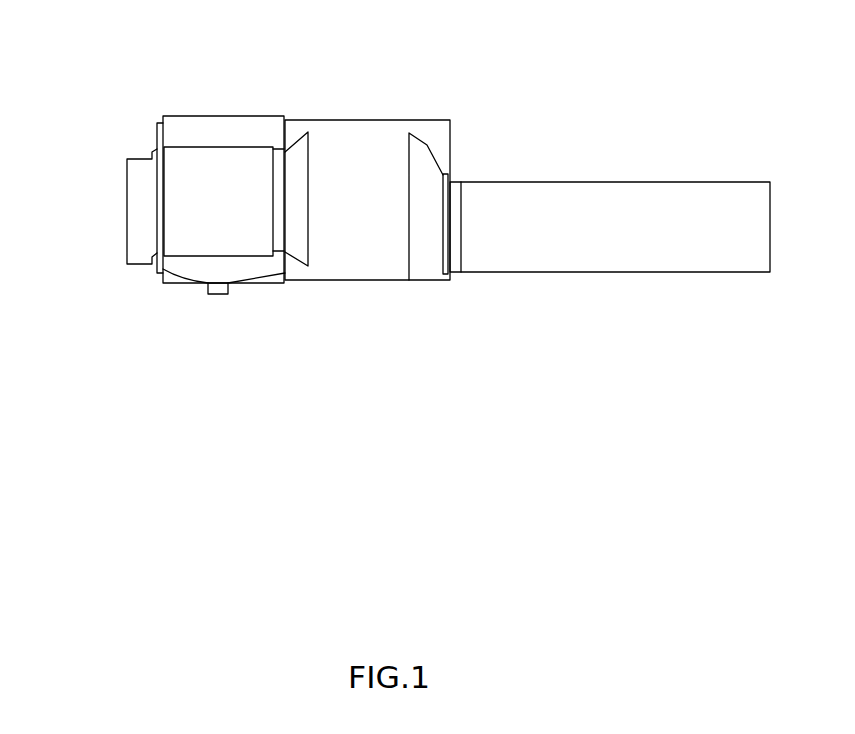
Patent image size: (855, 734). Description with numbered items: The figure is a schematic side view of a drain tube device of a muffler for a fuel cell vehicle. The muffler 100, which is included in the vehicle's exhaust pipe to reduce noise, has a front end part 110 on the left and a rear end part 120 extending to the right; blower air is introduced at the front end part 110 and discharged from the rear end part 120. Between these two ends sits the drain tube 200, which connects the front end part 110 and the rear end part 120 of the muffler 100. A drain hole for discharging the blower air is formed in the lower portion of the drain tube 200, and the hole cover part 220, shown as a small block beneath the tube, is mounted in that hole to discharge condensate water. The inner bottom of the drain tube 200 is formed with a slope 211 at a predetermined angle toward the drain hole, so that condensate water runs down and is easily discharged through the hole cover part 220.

The muffler 100 is at (105, 62).
The front end part 110 is at (141, 160).
The rear end part 120 is at (492, 190).
The drain tube 200 is at (323, 106).
The slope 211 is at (157, 268).
The hole cover part 220 is at (195, 296).